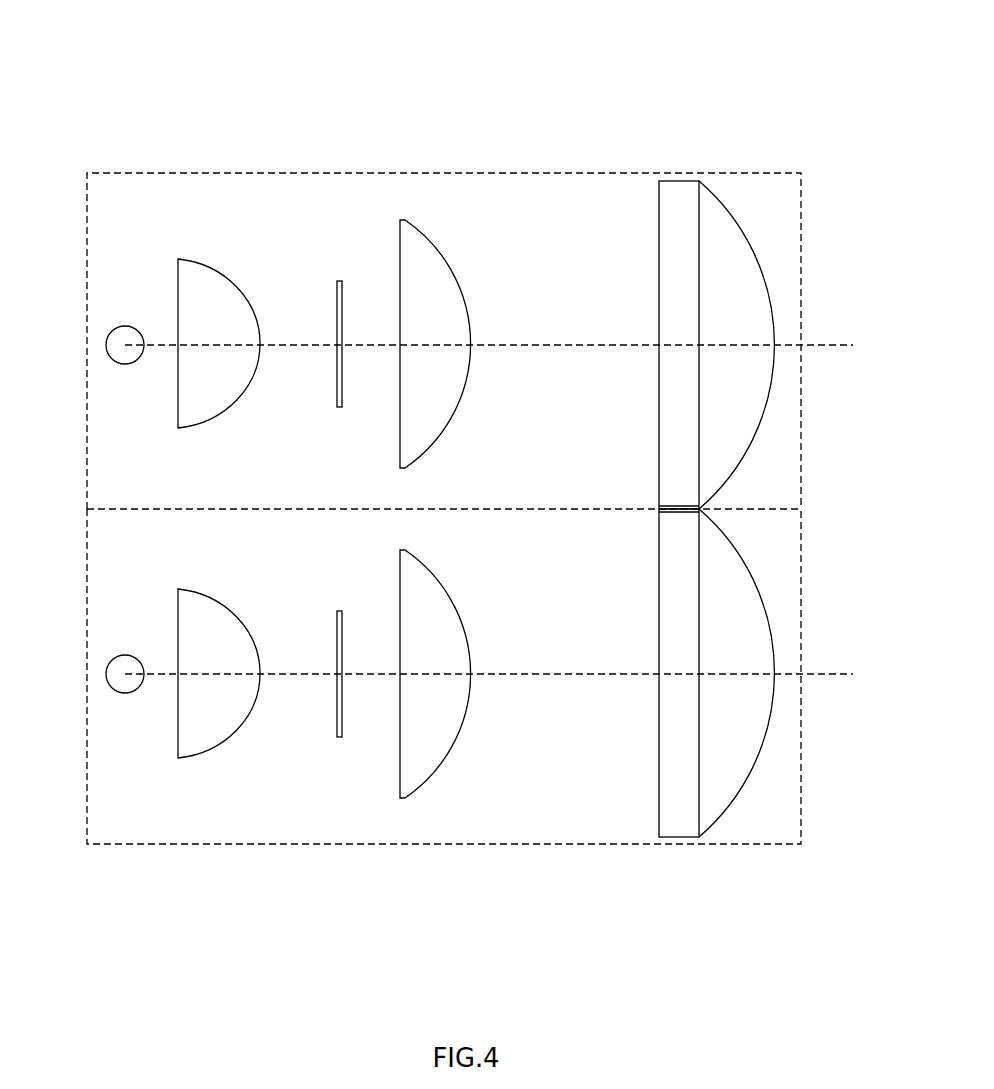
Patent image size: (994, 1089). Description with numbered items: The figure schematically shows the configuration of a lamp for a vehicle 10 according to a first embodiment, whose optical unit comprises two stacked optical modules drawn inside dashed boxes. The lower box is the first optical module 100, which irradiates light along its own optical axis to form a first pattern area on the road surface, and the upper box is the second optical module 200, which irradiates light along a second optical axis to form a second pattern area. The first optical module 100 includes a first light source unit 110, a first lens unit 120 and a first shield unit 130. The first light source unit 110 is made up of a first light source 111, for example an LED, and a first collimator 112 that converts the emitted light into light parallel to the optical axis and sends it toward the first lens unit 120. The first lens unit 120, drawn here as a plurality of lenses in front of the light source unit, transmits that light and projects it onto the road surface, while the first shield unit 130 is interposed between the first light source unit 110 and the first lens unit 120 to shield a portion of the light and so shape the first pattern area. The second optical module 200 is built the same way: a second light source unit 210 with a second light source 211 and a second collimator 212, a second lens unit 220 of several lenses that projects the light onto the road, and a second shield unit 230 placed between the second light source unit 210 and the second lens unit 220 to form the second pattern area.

The illumination optical system 10 is at (76, 23).
The first optical module 100 is at (87, 823).
The first light source unit 110 is at (243, 891).
The first light source 111 is at (125, 693).
The first collimator 112 is at (242, 727).
The first lens unit 120 is at (428, 782).
The first shield unit 130 is at (339, 737).
The second optical module 200 is at (87, 190).
The second light source unit 210 is at (243, 126).
The second light source 211 is at (123, 326).
The second collimator 212 is at (242, 290).
The second lens unit 220 is at (428, 240).
The second shield unit 230 is at (339, 281).